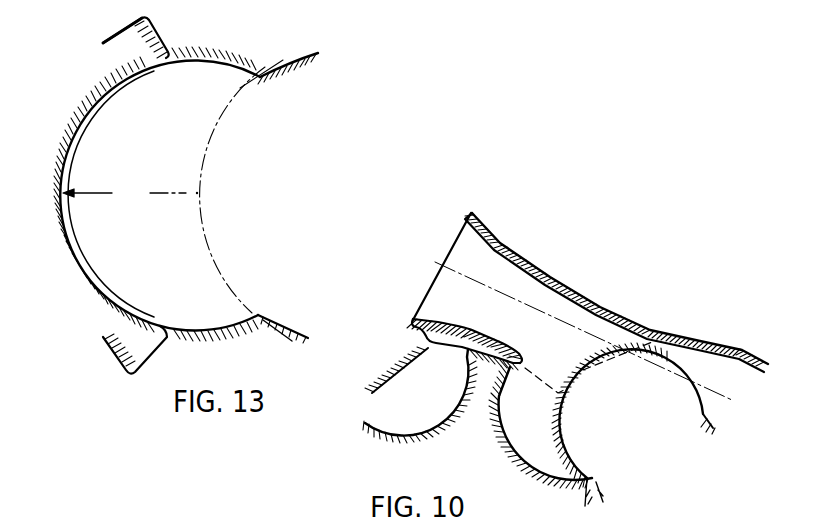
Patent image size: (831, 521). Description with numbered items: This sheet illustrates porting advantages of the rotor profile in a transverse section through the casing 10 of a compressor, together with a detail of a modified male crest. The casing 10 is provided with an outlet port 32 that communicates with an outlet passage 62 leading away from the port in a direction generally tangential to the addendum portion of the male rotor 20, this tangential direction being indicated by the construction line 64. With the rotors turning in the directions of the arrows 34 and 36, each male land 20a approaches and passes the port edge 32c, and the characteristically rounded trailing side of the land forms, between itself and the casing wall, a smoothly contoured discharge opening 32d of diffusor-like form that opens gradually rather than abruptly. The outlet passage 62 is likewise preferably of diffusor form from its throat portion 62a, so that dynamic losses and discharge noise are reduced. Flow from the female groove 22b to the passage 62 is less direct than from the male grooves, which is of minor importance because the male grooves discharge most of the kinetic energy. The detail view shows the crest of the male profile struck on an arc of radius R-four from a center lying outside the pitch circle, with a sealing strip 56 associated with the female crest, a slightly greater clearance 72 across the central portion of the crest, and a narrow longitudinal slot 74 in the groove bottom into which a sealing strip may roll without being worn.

In FIG. 10, the casing 10 is at (748, 330).
In FIG. 10, the male rotor 20 is at (718, 417).
In FIG. 10, the male land 20a is at (648, 417).
In FIG. 10, the female groove 22b is at (574, 457).
In FIG. 10, the outlet port 32 is at (581, 361).
In FIG. 10, the port edge 32c is at (653, 343).
In FIG. 10, the discharge opening 32d is at (668, 352).
In FIG. 10, the arrow indicating rotor rotation 34 is at (656, 472).
In FIG. 10, the arrow indicating rotor rotation 36 is at (437, 384).
In FIG. 13, the sealing strip 56 is at (64, 200).
In FIG. 10, the outlet passage 62 is at (458, 238).
In FIG. 10, the throat portion 62a is at (522, 335).
In FIG. 10, the construction line 64 is at (487, 283).
In FIG. 13, the clearance 72 is at (70, 131).
In FIG. 13, the slots 74 is at (288, 64).